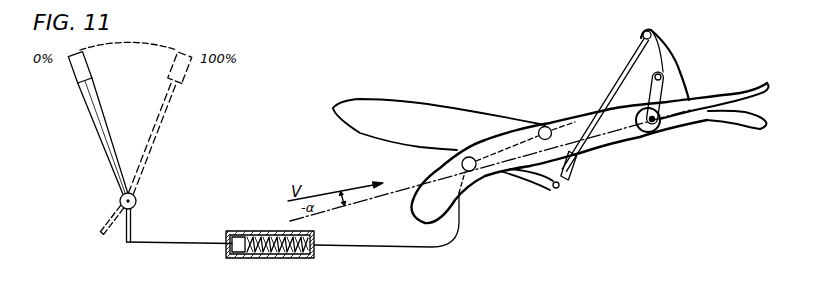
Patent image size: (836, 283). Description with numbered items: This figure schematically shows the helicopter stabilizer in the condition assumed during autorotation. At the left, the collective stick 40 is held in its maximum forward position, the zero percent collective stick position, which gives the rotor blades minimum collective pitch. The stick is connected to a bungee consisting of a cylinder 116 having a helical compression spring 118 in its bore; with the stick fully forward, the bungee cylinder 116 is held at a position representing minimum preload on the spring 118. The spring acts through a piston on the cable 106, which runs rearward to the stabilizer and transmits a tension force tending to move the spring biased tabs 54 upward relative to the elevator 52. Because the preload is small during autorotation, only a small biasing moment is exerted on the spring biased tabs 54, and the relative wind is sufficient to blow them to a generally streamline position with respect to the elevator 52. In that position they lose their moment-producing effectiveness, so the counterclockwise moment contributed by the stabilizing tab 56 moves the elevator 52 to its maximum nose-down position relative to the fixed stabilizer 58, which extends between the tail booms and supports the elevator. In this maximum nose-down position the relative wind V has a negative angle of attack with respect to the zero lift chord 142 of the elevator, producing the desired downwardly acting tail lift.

The collective stick 40 is at (104, 147).
The elevator 52 is at (473, 176).
The spring biased tabs 54 is at (720, 97).
The stabilizing tab 56 is at (730, 123).
The fixed stabilizer 58 is at (461, 114).
The cable 106 is at (396, 248).
The cylinder 116 is at (272, 231).
The helical compression spring 118 is at (283, 258).
The zero lift chord 142 is at (352, 205).